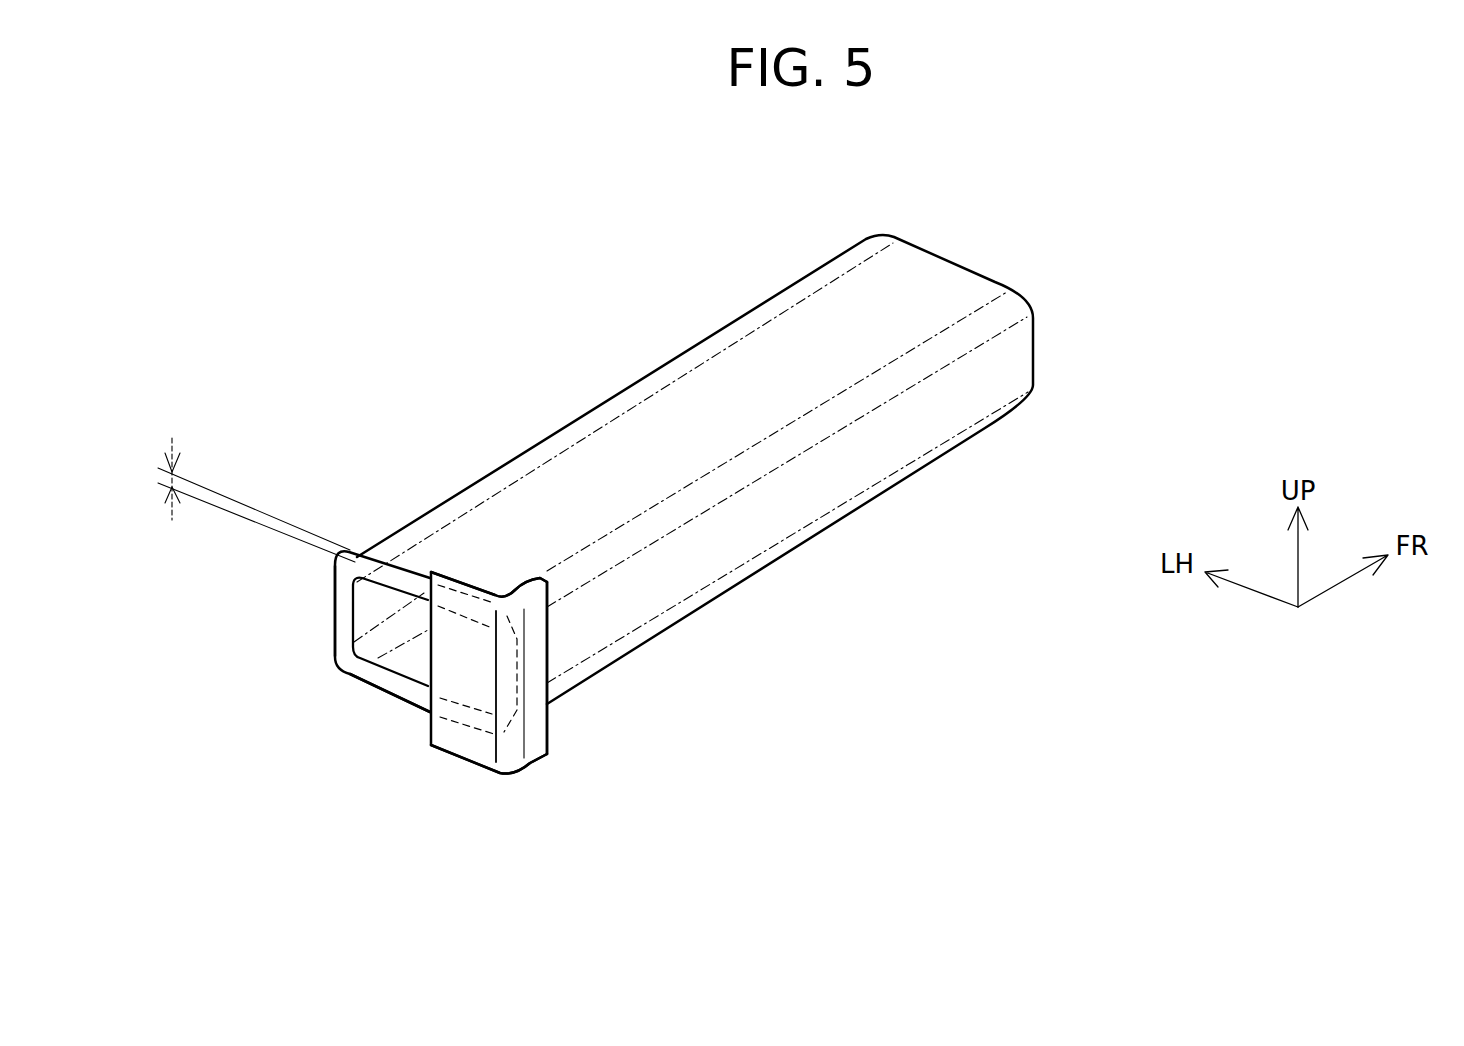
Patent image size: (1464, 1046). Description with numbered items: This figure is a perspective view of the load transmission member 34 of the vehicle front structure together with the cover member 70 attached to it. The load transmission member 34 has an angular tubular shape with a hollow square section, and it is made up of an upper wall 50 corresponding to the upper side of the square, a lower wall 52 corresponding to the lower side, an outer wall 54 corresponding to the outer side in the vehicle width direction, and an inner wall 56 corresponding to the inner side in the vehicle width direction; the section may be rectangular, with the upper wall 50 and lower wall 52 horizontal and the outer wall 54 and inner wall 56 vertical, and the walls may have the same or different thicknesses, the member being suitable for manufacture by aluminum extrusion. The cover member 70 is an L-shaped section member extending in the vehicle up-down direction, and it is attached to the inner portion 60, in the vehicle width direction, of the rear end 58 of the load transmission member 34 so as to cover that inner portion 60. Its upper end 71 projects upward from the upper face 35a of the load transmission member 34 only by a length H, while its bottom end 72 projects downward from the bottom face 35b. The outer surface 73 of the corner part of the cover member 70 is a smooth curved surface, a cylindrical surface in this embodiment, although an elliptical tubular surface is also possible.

The load transmission member 34 is at (728, 308).
The upper face 35a is at (820, 342).
The bottom face 35b is at (797, 547).
The upper wall 50 is at (395, 583).
The lower wall 52 is at (398, 702).
The outer wall 54 is at (333, 615).
The inner wall 56 is at (547, 700).
The rear end 58 is at (367, 687).
The inner portion 60 is at (524, 670).
The cover member 70 is at (455, 757).
The upper end 71 is at (472, 574).
The bottom end 72 is at (478, 770).
The outer surface 73 is at (508, 753).
The length H is at (168, 477).